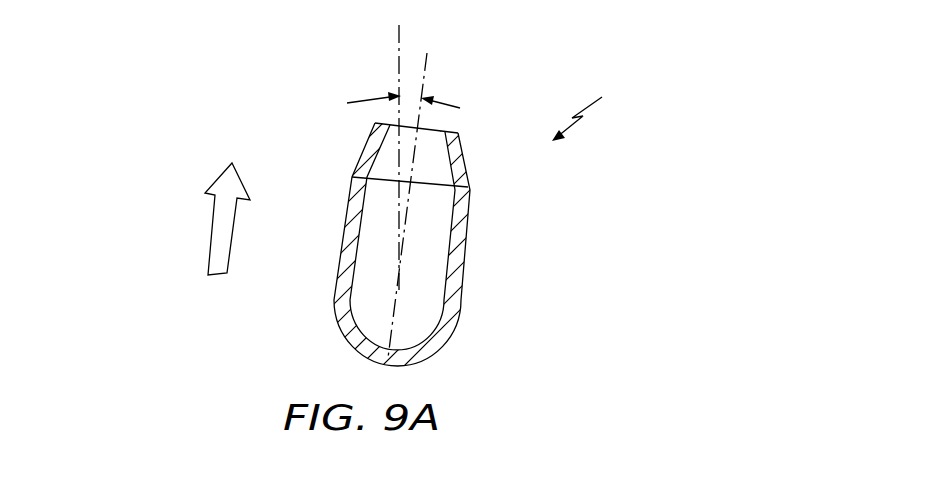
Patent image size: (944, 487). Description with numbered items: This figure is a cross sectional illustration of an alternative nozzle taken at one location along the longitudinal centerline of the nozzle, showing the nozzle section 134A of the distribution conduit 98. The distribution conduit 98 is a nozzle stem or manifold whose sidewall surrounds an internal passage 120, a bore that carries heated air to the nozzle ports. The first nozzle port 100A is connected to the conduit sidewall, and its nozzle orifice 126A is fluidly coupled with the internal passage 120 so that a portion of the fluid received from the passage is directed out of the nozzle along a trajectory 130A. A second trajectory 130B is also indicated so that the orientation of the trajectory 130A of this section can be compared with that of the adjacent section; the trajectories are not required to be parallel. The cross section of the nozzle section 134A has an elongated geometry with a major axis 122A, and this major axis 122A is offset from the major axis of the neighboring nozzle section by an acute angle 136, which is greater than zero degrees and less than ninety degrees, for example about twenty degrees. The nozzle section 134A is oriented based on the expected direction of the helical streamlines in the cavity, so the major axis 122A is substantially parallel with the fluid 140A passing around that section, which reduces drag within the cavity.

The distribution conduit 98 is at (328, 320).
The first nozzle port 100A is at (399, 250).
The internal passage 120 is at (425, 318).
The major axis 122A is at (408, 205).
The nozzle orifice 126A is at (442, 165).
The trajectory 130A is at (426, 68).
The trajectory 130B is at (399, 40).
The nozzle section 134A is at (597, 104).
The acute angle 136 is at (352, 101).
The fluid 140A is at (212, 230).